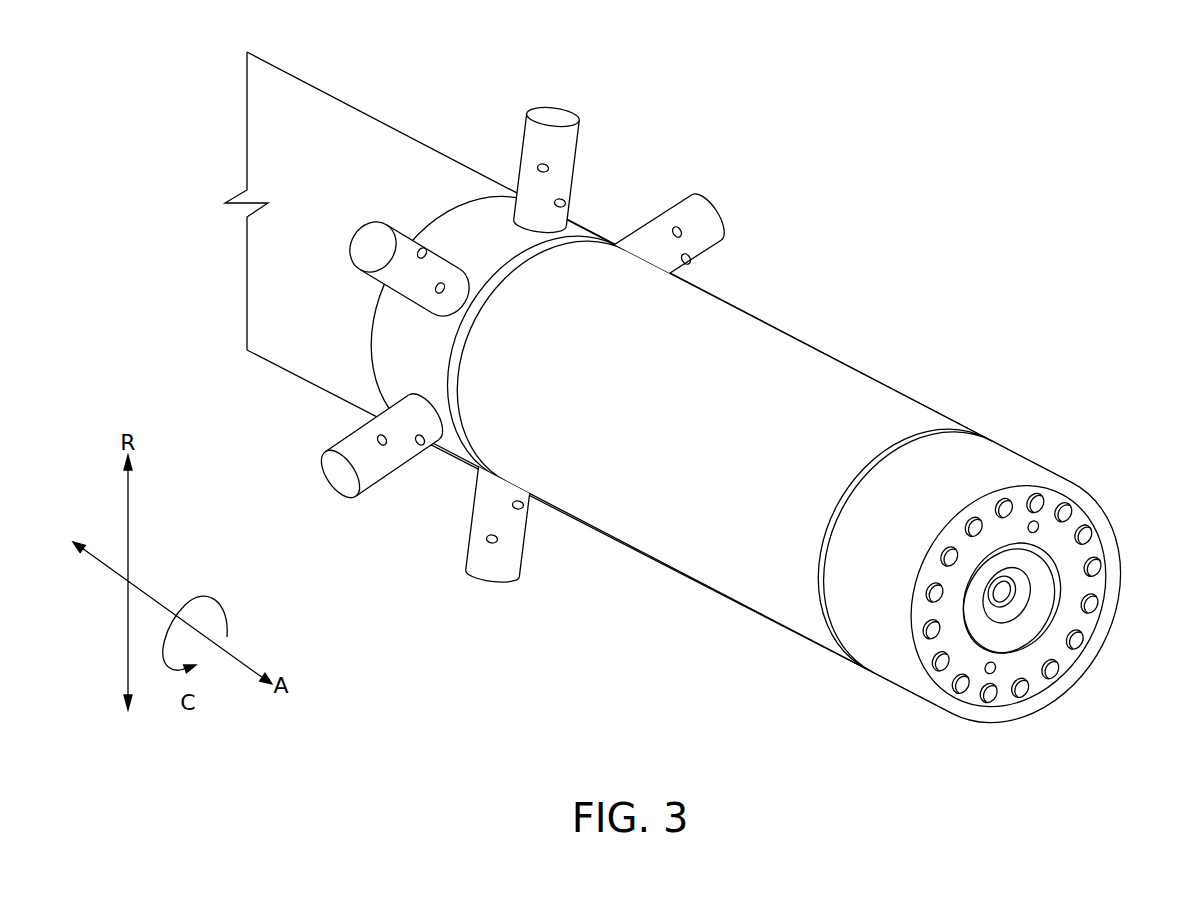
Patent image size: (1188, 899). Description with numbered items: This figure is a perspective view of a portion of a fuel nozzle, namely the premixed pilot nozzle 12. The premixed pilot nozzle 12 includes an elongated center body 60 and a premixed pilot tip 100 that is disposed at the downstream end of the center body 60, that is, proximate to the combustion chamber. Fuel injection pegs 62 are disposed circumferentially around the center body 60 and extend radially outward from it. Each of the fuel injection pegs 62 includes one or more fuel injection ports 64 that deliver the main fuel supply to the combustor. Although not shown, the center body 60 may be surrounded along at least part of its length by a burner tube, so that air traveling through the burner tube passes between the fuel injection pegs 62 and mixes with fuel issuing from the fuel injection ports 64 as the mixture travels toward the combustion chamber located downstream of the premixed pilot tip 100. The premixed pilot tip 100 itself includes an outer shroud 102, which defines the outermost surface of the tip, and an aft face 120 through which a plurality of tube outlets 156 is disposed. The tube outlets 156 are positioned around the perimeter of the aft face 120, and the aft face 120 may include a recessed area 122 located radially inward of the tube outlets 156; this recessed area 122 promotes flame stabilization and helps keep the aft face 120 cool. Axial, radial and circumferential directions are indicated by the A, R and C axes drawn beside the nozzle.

The premixed pilot nozzle 12 is at (838, 176).
The center body 60 is at (318, 82).
The fuel injection pegs 62 is at (643, 224).
The fuel injection ports 64 is at (498, 538).
The premixed pilot tip 100 is at (1056, 408).
The outer shroud 102 is at (890, 665).
The aft face 120 is at (1065, 617).
The recessed area 122 is at (1013, 625).
The tube outlets 156 is at (1083, 535).